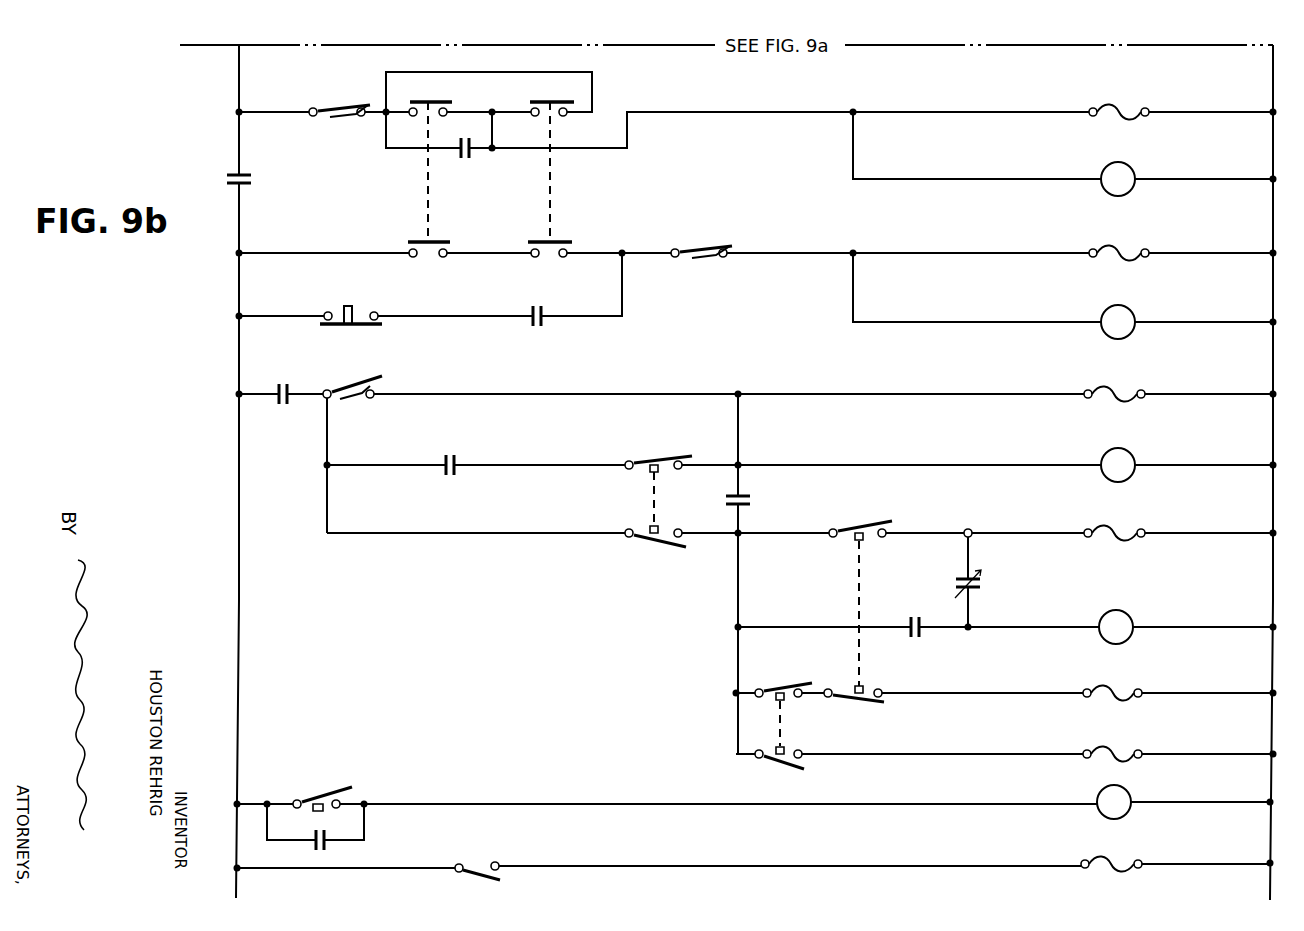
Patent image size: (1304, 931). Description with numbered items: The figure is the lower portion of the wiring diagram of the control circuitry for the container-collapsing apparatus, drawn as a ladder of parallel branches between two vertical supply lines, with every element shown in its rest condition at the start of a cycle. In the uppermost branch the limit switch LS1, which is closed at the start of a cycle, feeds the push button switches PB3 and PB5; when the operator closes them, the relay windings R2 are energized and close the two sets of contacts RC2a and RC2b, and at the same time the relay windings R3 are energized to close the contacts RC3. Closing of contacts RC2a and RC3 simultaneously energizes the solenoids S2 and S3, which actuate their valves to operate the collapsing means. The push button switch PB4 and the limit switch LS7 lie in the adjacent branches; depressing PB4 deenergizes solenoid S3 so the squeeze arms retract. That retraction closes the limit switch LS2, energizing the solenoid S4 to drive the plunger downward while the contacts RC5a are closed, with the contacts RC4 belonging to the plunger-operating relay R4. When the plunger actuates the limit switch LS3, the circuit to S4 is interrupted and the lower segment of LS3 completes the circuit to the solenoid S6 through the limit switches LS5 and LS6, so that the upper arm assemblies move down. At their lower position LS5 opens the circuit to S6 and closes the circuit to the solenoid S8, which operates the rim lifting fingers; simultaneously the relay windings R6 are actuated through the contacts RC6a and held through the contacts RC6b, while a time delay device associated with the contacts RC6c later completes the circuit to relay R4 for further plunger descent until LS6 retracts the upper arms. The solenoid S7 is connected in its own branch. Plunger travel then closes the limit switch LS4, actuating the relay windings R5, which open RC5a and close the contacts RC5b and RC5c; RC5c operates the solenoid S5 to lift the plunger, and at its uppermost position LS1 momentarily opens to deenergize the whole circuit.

The limit switch LS1 is at (356, 107).
The push button switch PB3 is at (430, 100).
The push button switch PB5 is at (558, 100).
The relay contacts RC2a is at (247, 184).
The relay contacts RC2b is at (459, 158).
The limit switch LS7 is at (724, 247).
The valve-actuating solenoid S2 is at (1120, 110).
The relay windings R2 is at (1122, 172).
The valve-actuating solenoid S3 is at (1119, 250).
The relay windings R3 is at (1124, 315).
The push button switch PB4 is at (357, 313).
The relay contacts RC3 is at (544, 323).
The limit switch LS2 is at (353, 388).
The relay contacts RC5a is at (294, 380).
The relay contacts RC4 is at (455, 457).
The limit switch LS3 is at (664, 458).
The relay contacts RC6c is at (750, 496).
The valve-actuating solenoid S4 is at (1120, 392).
The plunger-operating relay R4 is at (1122, 458).
The limit switch LS5 is at (866, 528).
The valve-actuating solenoid S8 is at (1120, 531).
The relay contacts RC6a is at (985, 581).
The relay contacts RC6b is at (909, 620).
The relay windings R6 is at (1120, 620).
The limit switch LS6 is at (795, 675).
The valve-actuating solenoid S6 is at (1118, 691).
The valve-actuating solenoid S7 is at (1116, 752).
The relay windings R5 is at (1118, 804).
The valve-actuating solenoid S5 is at (1118, 863).
The limit switch LS4 is at (306, 786).
The relay contacts RC5b is at (330, 845).
The relay contacts RC5c is at (480, 865).